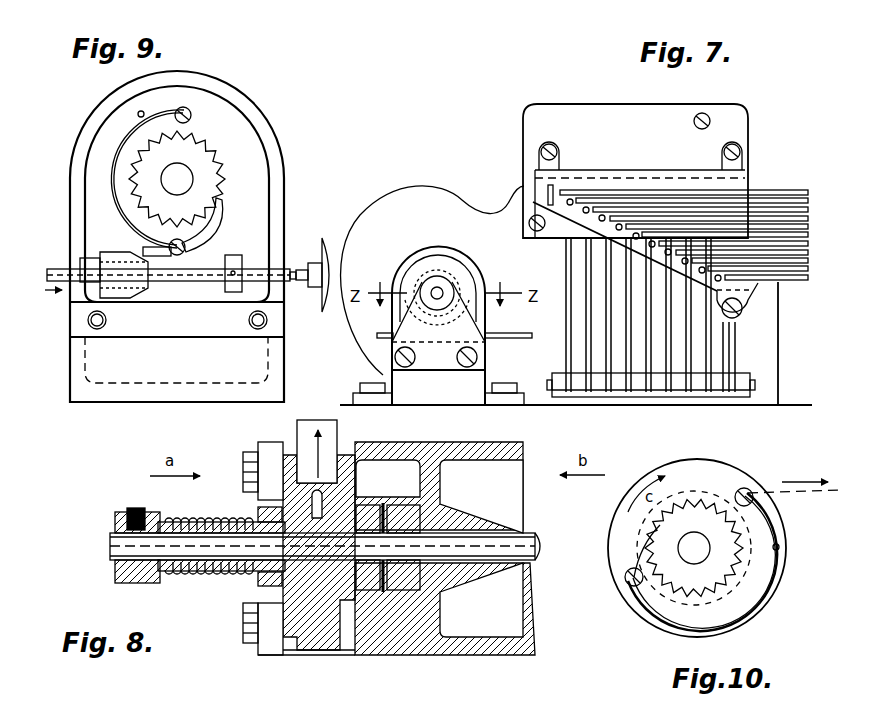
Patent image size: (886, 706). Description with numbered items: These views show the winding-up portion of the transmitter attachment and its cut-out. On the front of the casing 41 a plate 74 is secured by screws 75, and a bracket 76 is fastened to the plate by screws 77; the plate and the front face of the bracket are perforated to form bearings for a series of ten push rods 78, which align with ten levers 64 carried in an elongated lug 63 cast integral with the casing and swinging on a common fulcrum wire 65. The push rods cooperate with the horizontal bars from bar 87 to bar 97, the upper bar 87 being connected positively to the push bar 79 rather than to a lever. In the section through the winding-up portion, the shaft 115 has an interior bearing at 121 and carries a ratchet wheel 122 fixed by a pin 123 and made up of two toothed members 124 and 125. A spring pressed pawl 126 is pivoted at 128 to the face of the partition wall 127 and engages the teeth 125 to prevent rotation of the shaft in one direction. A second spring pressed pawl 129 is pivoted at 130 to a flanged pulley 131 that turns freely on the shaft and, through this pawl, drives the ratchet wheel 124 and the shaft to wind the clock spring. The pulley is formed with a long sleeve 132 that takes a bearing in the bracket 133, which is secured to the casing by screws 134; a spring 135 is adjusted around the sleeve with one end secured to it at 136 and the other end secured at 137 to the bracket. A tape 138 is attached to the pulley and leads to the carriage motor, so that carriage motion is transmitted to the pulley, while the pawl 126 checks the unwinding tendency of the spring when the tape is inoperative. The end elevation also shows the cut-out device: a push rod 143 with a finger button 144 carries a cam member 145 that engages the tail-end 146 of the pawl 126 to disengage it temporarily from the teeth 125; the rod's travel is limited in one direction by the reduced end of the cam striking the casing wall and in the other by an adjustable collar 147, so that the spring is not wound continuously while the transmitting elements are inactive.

In FIG. 9, the casing 41 is at (283, 150).
In FIG. 7, the elongated lug 63 is at (715, 398).
In FIG. 7, the levers 64 is at (566, 272).
In FIG. 7, the fulcrum wire 65 is at (755, 387).
In FIG. 7, the plate 74 is at (635, 171).
In FIG. 7, the screws 75 is at (705, 114).
In FIG. 7, the bracket 76 is at (658, 178).
In FIG. 7, the screws 77 is at (550, 148).
In FIG. 7, the push rods 78 is at (580, 222).
In FIG. 7, the push bar 79 is at (546, 193).
In FIG. 7, the upper bar 87 is at (800, 202).
In FIG. 7, the bar 97 is at (800, 285).
In FIG. 9, the shaft 115 is at (168, 222).
In FIG. 7, the shaft 115 is at (440, 290).
In FIG. 8, the shaft 115 is at (538, 546).
In FIG. 10, the shaft 115 is at (694, 548).
In FIG. 8, the interior bearing 121 is at (468, 520).
In FIG. 8, the ratchet wheel 122 is at (440, 575).
In FIG. 8, the pin 123 is at (383, 594).
In FIG. 8, the toothed member 124 is at (362, 500).
In FIG. 10, the toothed member 124 is at (694, 505).
In FIG. 9, the toothed member 125 is at (220, 168).
In FIG. 8, the toothed member 125 is at (400, 504).
In FIG. 9, the spring pressed pawl 126 is at (216, 222).
In FIG. 9, the partition wall 127 is at (174, 177).
In FIG. 8, the partition wall 127 is at (430, 610).
In FIG. 9, the pivot 128 is at (180, 256).
In FIG. 10, the spring pressed pawl 129 is at (640, 548).
In FIG. 10, the pivot 130 is at (628, 582).
In FIG. 7, the flanged pulley 131 is at (417, 268).
In FIG. 8, the flanged pulley 131 is at (327, 595).
In FIG. 10, the flanged pulley 131 is at (776, 590).
In FIG. 8, the sleeve 132 is at (218, 526).
In FIG. 7, the bracket 133 is at (424, 358).
In FIG. 8, the bracket 133 is at (266, 656).
In FIG. 7, the screws 134 is at (478, 358).
In FIG. 8, the screws 134 is at (248, 470).
In FIG. 8, the spring 135 is at (200, 580).
In FIG. 8, the spring attachment point 136 is at (160, 582).
In FIG. 8, the spring attachment point 137 is at (258, 582).
In FIG. 8, the tape 138 is at (318, 420).
In FIG. 9, the push rod 143 is at (315, 262).
In FIG. 7, the push rod 143 is at (508, 336).
In FIG. 9, the finger button 144 is at (331, 252).
In FIG. 7, the finger button 144 is at (432, 280).
In FIG. 9, the cam member 145 is at (108, 262).
In FIG. 9, the tail-end 146 is at (155, 258).
In FIG. 9, the adjustable collar 147 is at (240, 252).